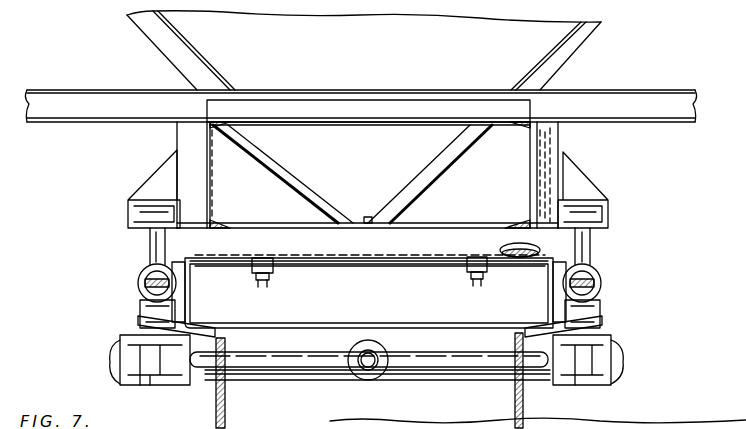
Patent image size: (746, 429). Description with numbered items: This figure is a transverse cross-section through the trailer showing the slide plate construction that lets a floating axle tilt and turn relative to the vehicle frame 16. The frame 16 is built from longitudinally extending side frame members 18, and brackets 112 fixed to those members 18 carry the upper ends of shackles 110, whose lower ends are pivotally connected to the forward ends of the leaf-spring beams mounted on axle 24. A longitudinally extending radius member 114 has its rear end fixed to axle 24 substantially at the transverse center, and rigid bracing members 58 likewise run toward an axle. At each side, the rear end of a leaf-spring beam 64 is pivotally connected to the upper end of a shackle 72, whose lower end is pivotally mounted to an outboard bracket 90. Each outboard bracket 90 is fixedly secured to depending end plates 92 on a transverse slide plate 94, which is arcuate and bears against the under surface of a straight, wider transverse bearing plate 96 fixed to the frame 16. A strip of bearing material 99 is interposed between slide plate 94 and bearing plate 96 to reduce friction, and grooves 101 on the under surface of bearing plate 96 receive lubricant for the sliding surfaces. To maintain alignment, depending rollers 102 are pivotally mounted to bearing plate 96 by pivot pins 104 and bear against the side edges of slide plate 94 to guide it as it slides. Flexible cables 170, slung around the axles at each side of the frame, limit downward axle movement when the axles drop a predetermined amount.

The vehicle frame 16 is at (568, 144).
The side frame members 18 is at (212, 181).
The axle 24 is at (447, 380).
The bracing members 58 is at (298, 352).
The beams 64 is at (190, 296).
The shackle 72 is at (147, 291).
The outboard bracket 90 is at (139, 320).
The depending end plates 92 is at (195, 312).
The transverse slide plate 94 is at (322, 264).
The bearing plate 96 is at (513, 250).
The strip of bearing material 99 is at (372, 262).
The grooves 101 is at (506, 255).
The rollers 102 is at (275, 258).
The pivot pins 104 is at (262, 275).
The shackles 110 is at (150, 249).
The brackets 112 is at (168, 175).
The radius member 114 is at (375, 380).
The flexible cables 170 is at (226, 398).